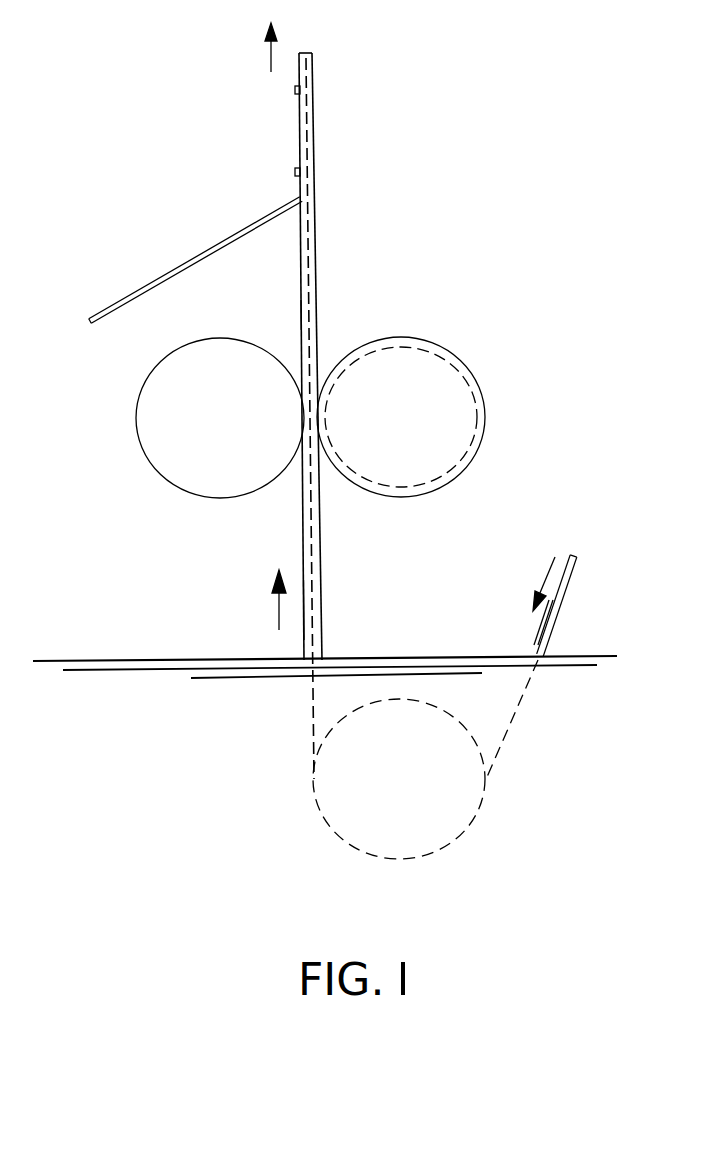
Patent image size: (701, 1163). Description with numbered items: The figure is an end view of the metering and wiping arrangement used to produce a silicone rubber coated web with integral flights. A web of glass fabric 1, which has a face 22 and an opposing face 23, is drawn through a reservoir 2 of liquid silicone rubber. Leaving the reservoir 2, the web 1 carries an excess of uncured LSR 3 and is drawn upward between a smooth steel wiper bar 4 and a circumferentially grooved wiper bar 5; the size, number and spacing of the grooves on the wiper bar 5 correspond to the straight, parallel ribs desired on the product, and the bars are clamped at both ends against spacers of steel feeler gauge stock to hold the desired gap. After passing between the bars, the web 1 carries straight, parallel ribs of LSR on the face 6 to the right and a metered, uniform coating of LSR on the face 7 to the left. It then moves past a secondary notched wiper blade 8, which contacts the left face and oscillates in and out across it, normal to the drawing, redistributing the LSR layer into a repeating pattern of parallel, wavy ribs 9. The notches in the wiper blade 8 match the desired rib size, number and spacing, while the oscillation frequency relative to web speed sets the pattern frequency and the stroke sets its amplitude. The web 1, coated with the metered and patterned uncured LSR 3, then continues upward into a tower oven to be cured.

The web of glass fabric 1 is at (574, 575).
The reservoir 2 is at (192, 660).
The uncured LSR 3 is at (323, 595).
The smooth steel wiper bar 4 is at (143, 425).
The circumferentially grooved wiper bar 5 is at (460, 420).
The face carrying straight parallel ribs 6 is at (318, 290).
The face carrying metered uniform coating 7 is at (302, 316).
The notched wiper blade 8 is at (190, 258).
The wavy ribs 9 is at (296, 90).
The face 22 is at (536, 628).
The opposing face 23 is at (560, 630).